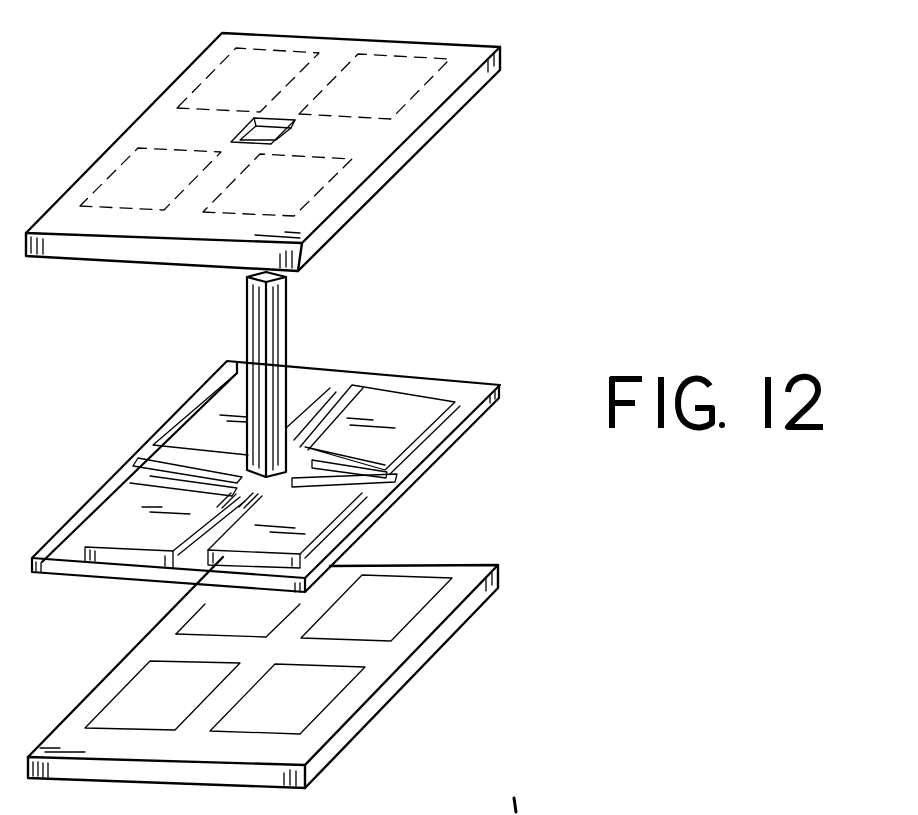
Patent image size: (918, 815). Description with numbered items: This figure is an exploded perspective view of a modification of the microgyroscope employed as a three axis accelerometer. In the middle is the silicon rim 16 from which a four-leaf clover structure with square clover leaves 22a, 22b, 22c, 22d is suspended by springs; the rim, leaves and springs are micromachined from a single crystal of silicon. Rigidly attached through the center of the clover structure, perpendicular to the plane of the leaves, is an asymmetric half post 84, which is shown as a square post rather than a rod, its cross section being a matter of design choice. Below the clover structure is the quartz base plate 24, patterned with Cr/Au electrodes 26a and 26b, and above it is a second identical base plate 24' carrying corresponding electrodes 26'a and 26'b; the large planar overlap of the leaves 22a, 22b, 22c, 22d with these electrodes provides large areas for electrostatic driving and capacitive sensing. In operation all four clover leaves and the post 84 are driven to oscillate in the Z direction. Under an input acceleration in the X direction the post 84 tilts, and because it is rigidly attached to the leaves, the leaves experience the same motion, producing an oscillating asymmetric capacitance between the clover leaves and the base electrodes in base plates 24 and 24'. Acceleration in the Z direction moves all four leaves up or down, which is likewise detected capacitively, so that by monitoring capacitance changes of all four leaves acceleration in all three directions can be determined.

The second base plate 24' is at (263, 152).
The electrode 26'a is at (199, 129).
The electrode 26'b is at (387, 111).
The half post 84 is at (277, 338).
The rim 16 is at (467, 428).
The clover leaf 22a is at (137, 507).
The clover leaf 22b is at (323, 513).
The clover leaf 22c is at (398, 408).
The clover leaf 22d is at (210, 430).
The quartz base plate 24 is at (263, 673).
The electrode 26a is at (213, 623).
The electrode 26b is at (333, 687).